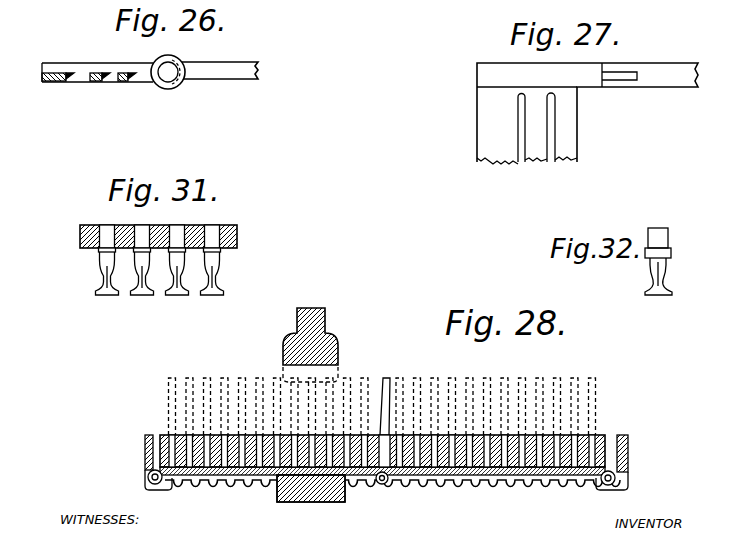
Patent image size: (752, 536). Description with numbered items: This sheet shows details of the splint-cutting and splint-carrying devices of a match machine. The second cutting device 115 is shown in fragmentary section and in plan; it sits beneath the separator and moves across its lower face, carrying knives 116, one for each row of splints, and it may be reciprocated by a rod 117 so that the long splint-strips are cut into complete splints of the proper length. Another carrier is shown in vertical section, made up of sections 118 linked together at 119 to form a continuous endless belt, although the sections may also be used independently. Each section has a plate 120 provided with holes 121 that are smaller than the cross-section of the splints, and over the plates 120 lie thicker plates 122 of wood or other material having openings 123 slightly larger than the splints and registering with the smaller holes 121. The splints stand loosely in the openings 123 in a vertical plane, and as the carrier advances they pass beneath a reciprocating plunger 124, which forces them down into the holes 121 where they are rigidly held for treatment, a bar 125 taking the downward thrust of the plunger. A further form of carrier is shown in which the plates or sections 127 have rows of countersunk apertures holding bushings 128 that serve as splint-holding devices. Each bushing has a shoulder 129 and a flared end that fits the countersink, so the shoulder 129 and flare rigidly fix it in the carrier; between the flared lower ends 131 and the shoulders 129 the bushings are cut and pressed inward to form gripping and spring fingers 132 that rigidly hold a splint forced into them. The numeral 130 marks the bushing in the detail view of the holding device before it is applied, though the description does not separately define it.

In FIG. 26, the second cutting device 115 is at (111, 61).
In FIG. 27, the second cutting device 115 is at (562, 113).
In FIG. 26, the knives 116 is at (60, 83).
In FIG. 27, the knives 116 is at (598, 120).
In FIG. 26, the rod 117 is at (230, 73).
In FIG. 27, the rod 117 is at (685, 80).
In FIG. 28, the sections 118 is at (208, 479).
In FIG. 28, the links 119 is at (383, 485).
In FIG. 28, the plate 120 is at (147, 487).
In FIG. 28, the holes 121 is at (190, 470).
In FIG. 28, the thicker plates 122 is at (160, 438).
In FIG. 28, the openings 123 is at (386, 413).
In FIG. 28, the reciprocating plunger 124 is at (325, 330).
In FIG. 28, the bar 125 is at (316, 503).
In FIG. 31, the plates or sections 127 is at (230, 236).
In FIG. 31, the bushings 128 is at (221, 260).
In FIG. 32, the bushings 128 is at (668, 232).
In FIG. 31, the shoulder 129 is at (98, 252).
In FIG. 32, the shoulder 129 is at (672, 252).
In FIG. 31, the head 130 is at (103, 232).
In FIG. 32, the head 130 is at (660, 296).
In FIG. 31, the flared lower ends 131 is at (110, 293).
In FIG. 31, the gripping and spring fingers 132 is at (220, 278).
In FIG. 32, the gripping and spring fingers 132 is at (668, 282).